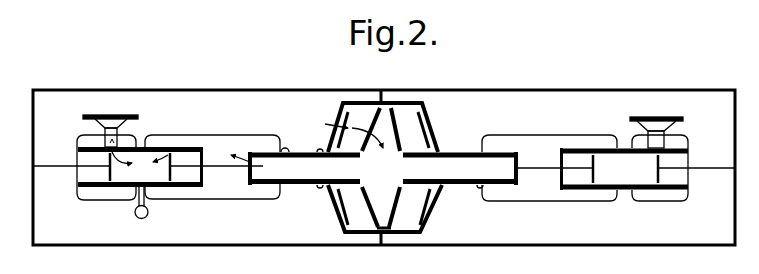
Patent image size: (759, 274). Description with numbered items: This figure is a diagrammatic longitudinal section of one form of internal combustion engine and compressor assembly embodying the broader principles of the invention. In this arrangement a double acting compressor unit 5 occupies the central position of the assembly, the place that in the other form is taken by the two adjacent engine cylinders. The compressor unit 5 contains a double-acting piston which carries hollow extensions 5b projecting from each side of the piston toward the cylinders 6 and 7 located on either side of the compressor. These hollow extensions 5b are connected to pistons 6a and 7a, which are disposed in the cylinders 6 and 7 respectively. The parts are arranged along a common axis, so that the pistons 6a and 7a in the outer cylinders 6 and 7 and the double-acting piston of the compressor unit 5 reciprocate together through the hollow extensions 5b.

The double acting compressor unit 5 is at (404, 103).
The hollow extensions 5b is at (292, 153).
The cylinder 6 is at (125, 177).
The piston 6a is at (177, 152).
The cylinder 7 is at (645, 173).
The piston 7a is at (597, 150).